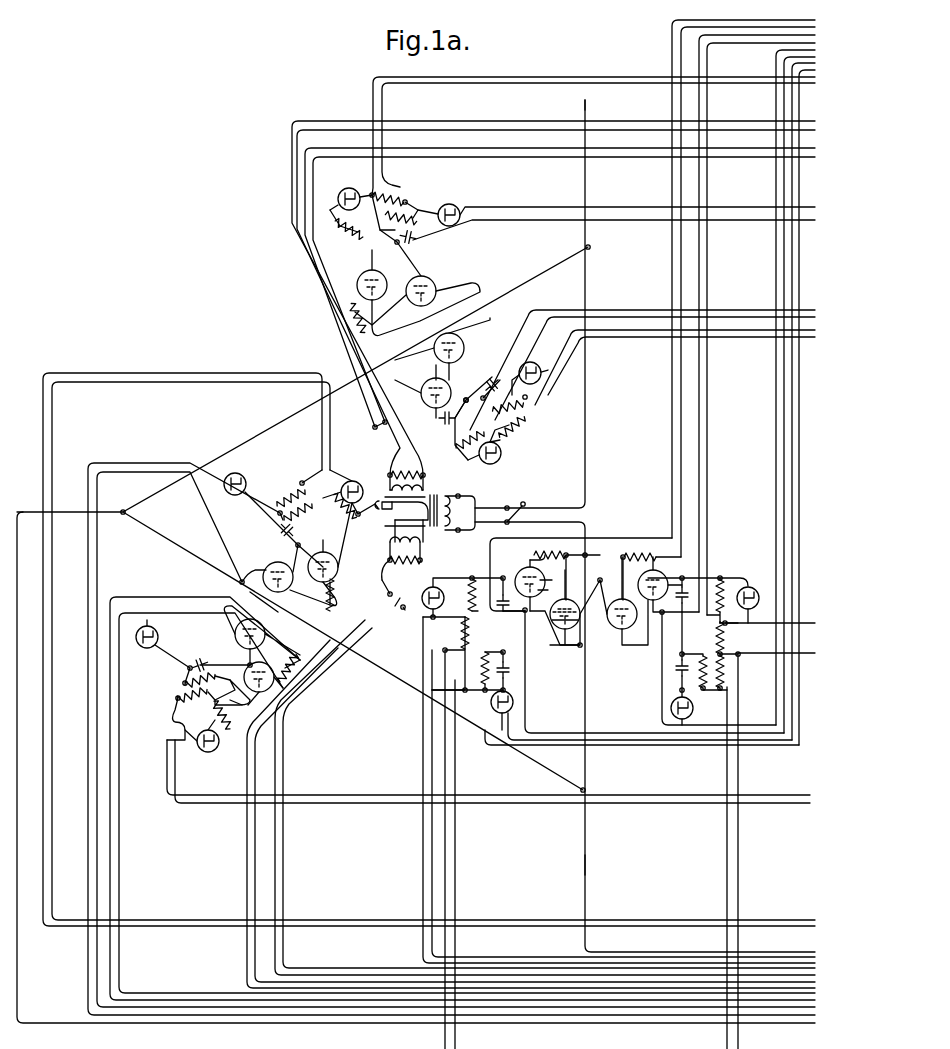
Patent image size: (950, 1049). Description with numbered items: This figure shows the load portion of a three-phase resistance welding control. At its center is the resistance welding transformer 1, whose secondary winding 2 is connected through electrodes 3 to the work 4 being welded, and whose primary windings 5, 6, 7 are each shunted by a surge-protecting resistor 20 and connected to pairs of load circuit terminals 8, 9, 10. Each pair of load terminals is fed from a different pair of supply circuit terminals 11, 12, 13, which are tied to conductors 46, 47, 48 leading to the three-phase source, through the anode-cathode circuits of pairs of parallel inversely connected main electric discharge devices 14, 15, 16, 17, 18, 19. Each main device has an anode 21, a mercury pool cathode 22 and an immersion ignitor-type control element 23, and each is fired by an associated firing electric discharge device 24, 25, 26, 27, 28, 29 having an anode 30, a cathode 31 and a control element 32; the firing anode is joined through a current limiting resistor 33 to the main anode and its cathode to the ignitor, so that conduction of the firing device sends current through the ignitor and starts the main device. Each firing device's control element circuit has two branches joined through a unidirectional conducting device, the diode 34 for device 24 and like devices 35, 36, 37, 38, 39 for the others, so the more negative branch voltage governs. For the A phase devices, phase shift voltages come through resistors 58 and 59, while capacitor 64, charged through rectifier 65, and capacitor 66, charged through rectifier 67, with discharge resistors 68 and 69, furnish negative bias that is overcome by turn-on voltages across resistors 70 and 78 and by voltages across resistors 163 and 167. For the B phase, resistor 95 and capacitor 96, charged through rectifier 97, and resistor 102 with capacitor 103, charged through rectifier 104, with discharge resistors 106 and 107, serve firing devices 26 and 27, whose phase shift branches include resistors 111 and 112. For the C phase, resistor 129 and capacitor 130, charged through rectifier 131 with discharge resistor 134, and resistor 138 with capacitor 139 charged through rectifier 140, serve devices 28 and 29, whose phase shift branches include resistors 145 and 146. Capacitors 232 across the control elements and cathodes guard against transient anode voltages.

The resistance welding transformer 1 is at (433, 478).
The secondary winding 2 is at (427, 512).
The electrodes 3 is at (375, 498).
The work 4 is at (392, 504).
The primary winding 5 is at (446, 496).
The primary winding 6 is at (425, 542).
The primary winding 7 is at (392, 490).
The load circuit terminals 8 is at (502, 506).
The load circuit terminals 9 is at (403, 607).
The load circuit terminals 10 is at (372, 427).
The supply circuit terminal 11 is at (590, 245).
The supply circuit terminal 12 is at (587, 790).
The supply circuit terminal 13 is at (123, 508).
The electric discharge device 14 is at (556, 645).
The electric discharge device 15 is at (625, 631).
The electric discharge device 16 is at (276, 562).
The electric discharge device 17 is at (235, 634).
The electric discharge device 18 is at (464, 350).
The electric discharge device 19 is at (422, 280).
The resistor 20 is at (390, 472).
The anode 21 is at (568, 603).
The mercury pool cathode 22 is at (550, 620).
The immersion ignitor-type control element 23 is at (550, 612).
The firing electric discharge device 24 is at (532, 560).
The firing electric discharge device 25 is at (662, 570).
The firing electric discharge device 26 is at (339, 562).
The firing electric discharge device 27 is at (263, 694).
The firing electric discharge device 28 is at (429, 408).
The firing electric discharge device 29 is at (357, 284).
The anode 30 is at (541, 578).
The cathode 31 is at (544, 589).
The control element 32 is at (518, 574).
The current limiting resistor 33 is at (560, 555).
The diode 34 is at (428, 590).
The unidirectional current conducting device 35 is at (749, 587).
The unidirectional current conducting device 36 is at (208, 752).
The unidirectional current conducting device 37 is at (352, 481).
The unidirectional current conducting device 38 is at (502, 453).
The unidirectional current conducting device 39 is at (349, 188).
The conductor 46 is at (585, 107).
The conductor 47 is at (587, 865).
The conductor 48 is at (27, 512).
The resistor 58 is at (472, 578).
The resistor 59 is at (722, 580).
The capacitor 64 is at (673, 668).
The rectifier 65 is at (693, 709).
The capacitor 66 is at (504, 650).
The rectifier 67 is at (498, 708).
The discharge resistor 68 is at (703, 655).
The discharge resistor 69 is at (485, 652).
The resistor 70 is at (467, 688).
The resistor 78 is at (730, 672).
The resistor 95 is at (302, 481).
The capacitor 96 is at (290, 540).
The rectifier 97 is at (236, 473).
The resistor 102 is at (178, 698).
The capacitor 103 is at (190, 670).
The rectifier 104 is at (143, 646).
The discharge resistor 106 is at (288, 498).
The discharge resistor 107 is at (185, 683).
The resistor 111 is at (358, 514).
The resistor 112 is at (225, 730).
The resistor 129 is at (525, 416).
The capacitor 130 is at (480, 383).
The rectifier 131 is at (541, 373).
The discharge resistor 134 is at (525, 400).
The resistor 138 is at (400, 197).
The capacitor 139 is at (420, 240).
The rectifier 140 is at (451, 204).
The resistor 145 is at (462, 453).
The resistor 146 is at (334, 210).
The resistor 163 is at (458, 633).
The resistor 167 is at (727, 638).
The capacitor 232 is at (500, 606).